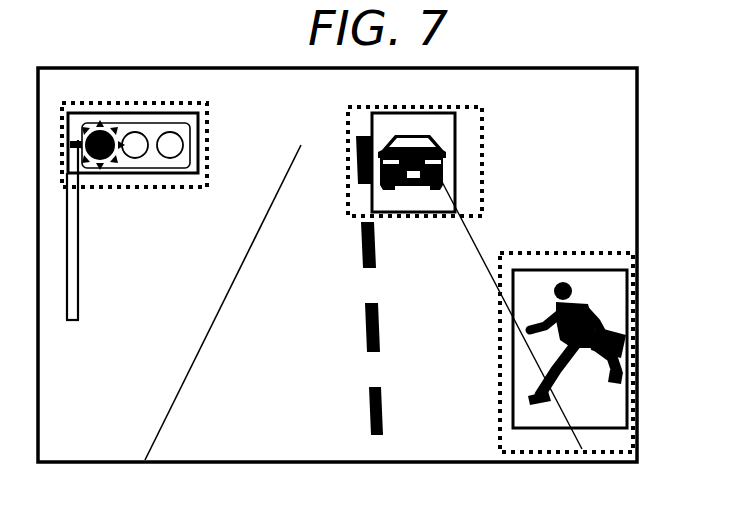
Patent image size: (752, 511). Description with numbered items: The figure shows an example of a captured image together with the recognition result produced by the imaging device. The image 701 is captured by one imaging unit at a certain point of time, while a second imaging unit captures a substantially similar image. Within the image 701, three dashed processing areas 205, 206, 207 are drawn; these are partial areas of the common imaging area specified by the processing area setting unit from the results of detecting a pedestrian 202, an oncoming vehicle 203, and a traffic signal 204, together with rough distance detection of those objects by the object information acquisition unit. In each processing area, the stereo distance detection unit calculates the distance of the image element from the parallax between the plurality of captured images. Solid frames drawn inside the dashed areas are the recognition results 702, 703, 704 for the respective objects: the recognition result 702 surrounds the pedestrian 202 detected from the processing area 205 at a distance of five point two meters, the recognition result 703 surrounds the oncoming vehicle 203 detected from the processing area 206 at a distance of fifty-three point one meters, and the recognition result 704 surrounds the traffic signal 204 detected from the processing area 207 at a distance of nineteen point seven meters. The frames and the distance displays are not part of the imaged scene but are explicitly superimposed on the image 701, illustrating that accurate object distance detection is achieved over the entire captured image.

The image 701 is at (337, 241).
The processing area 207 is at (166, 135).
The recognition result 704 is at (133, 168).
The traffic signal 204 is at (140, 220).
The recognition result 703 is at (439, 148).
The processing area 206 is at (441, 153).
The oncoming vehicle 203 is at (412, 190).
The processing area 205 is at (566, 325).
The recognition result 702 is at (542, 349).
The pedestrian 202 is at (577, 350).